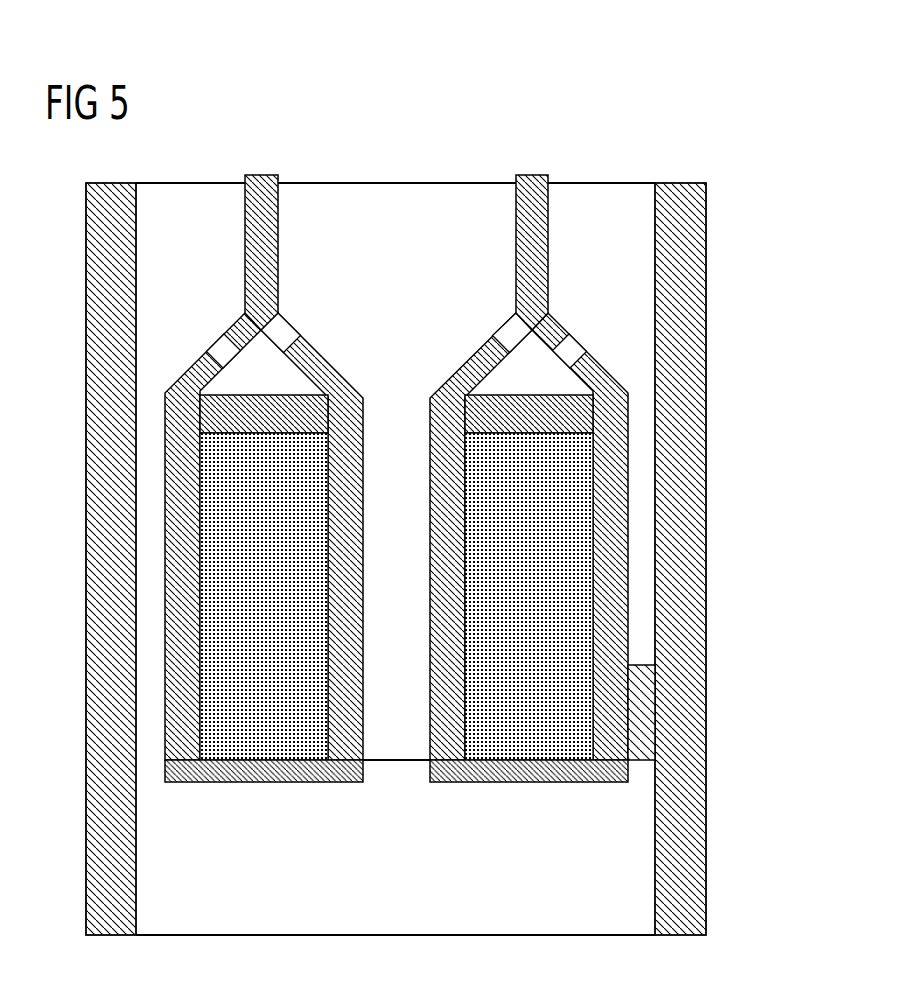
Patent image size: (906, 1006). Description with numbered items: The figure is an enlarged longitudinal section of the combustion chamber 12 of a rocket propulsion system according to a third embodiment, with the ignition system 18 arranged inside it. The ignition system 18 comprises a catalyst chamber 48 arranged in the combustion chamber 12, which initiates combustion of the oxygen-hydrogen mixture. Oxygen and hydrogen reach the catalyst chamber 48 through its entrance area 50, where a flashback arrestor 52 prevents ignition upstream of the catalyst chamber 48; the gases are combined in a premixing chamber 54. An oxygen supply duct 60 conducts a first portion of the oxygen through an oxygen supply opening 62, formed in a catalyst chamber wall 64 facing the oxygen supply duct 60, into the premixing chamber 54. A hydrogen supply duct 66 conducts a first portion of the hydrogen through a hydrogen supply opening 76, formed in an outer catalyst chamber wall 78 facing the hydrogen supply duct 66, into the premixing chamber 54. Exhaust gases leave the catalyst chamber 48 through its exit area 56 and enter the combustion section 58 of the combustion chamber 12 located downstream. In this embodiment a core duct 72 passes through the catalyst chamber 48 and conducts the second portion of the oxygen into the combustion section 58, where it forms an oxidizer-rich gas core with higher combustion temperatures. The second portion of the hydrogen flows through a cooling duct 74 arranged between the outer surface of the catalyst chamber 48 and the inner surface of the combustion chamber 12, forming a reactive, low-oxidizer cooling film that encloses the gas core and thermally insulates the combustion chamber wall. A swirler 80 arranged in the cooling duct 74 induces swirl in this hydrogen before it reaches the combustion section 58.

The combustion chamber 12 is at (411, 560).
The ignition system 18 is at (576, 158).
The catalyst chamber 48 is at (720, 485).
The entrance area 50 is at (312, 502).
The flashback arrestor 52 is at (213, 418).
The premixing chamber 54 is at (243, 364).
The exit area 56 is at (215, 842).
The combustion section 58 is at (457, 957).
The oxygen supply duct 60 is at (387, 198).
The oxygen supply opening 62 is at (304, 298).
The catalyst chamber wall 64 is at (530, 173).
The hydrogen supply duct 66 is at (630, 195).
The core duct 72 is at (397, 779).
The cooling duct 74 is at (145, 562).
The hydrogen supply opening 76 is at (626, 315).
The outer catalyst chamber wall 78 is at (720, 400).
The swirler 80 is at (720, 730).